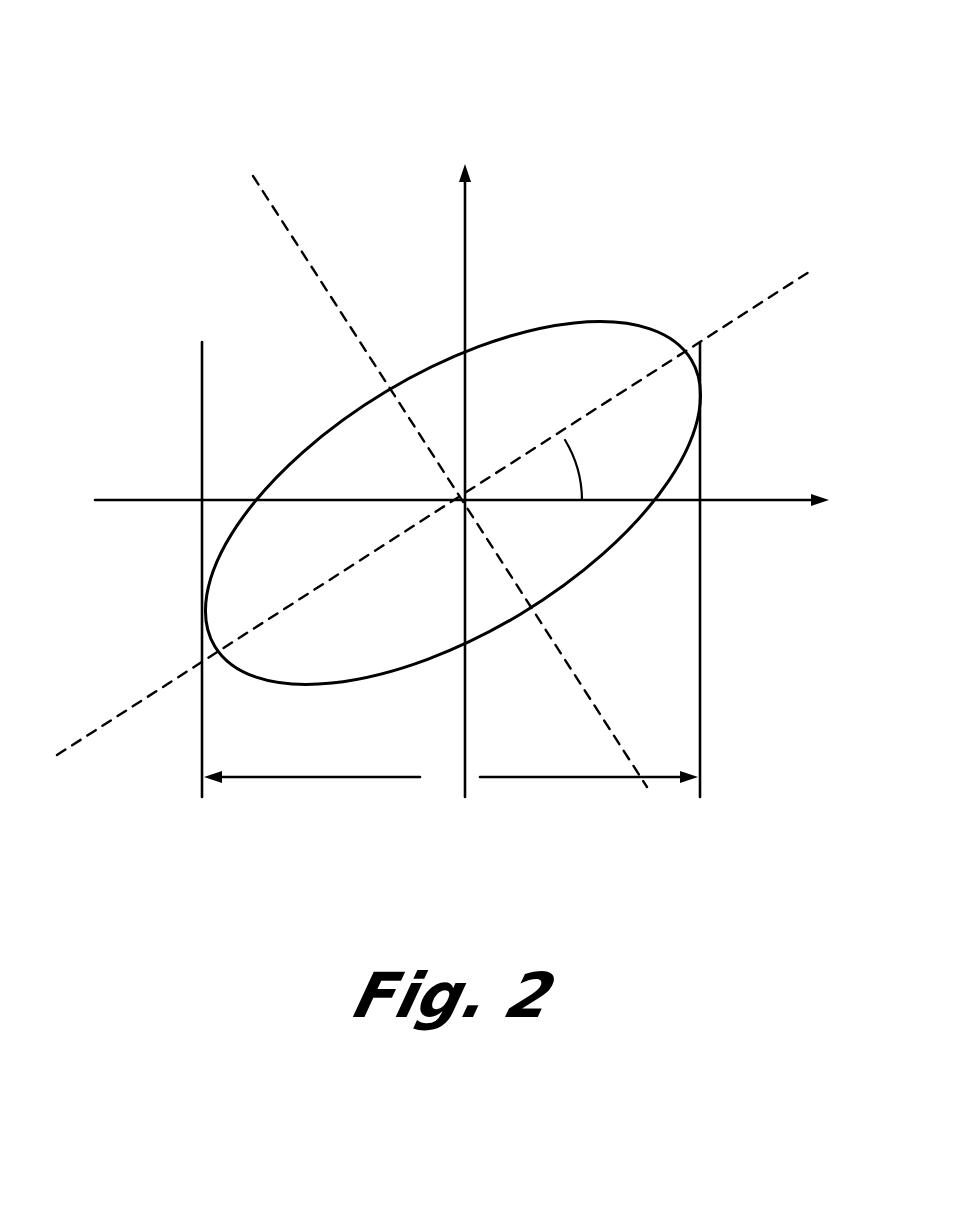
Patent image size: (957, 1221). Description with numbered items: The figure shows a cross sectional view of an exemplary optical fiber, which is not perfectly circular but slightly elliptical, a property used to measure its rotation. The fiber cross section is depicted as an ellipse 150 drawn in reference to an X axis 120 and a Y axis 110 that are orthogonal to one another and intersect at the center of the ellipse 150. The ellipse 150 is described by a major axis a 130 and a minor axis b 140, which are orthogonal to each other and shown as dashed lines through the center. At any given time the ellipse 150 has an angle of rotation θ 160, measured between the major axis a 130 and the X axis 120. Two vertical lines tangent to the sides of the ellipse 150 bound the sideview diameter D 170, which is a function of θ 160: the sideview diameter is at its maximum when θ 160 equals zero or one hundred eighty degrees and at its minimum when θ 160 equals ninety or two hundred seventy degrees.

The Y axis 110 is at (466, 223).
The X axis 120 is at (750, 500).
The major axis a 130 is at (722, 325).
The minor axis b 140 is at (280, 213).
The ellipse 150 is at (290, 463).
The angle of rotation θ 160 is at (608, 455).
The sideview diameter D 170 is at (370, 778).